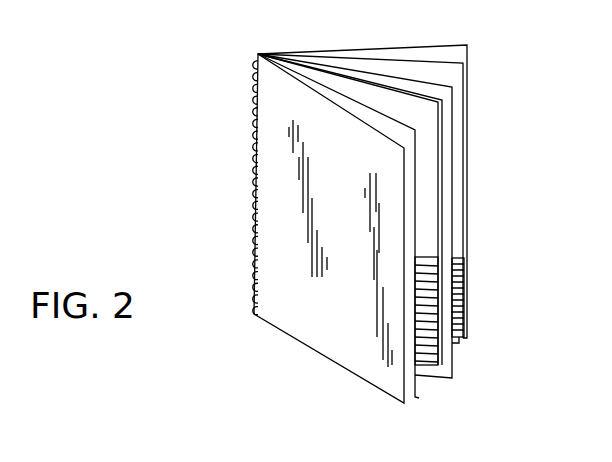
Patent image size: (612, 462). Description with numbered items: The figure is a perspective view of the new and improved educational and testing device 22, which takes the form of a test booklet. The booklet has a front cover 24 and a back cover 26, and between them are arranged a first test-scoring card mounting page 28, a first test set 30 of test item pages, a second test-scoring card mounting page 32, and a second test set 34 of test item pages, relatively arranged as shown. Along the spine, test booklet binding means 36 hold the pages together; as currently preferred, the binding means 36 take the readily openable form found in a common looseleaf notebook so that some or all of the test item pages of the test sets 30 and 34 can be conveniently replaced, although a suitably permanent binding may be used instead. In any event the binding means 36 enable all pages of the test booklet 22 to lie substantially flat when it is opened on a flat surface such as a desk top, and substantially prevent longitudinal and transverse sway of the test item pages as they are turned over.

The educational and testing device 22 is at (360, 45).
The front cover 24 is at (308, 332).
The back cover 26 is at (450, 45).
The first test-scoring card mounting page 28 is at (417, 228).
The first test set 30 is at (433, 202).
The second test-scoring card mounting page 32 is at (452, 123).
The second test set 34 is at (462, 80).
The test booklet binding means 36 is at (248, 177).